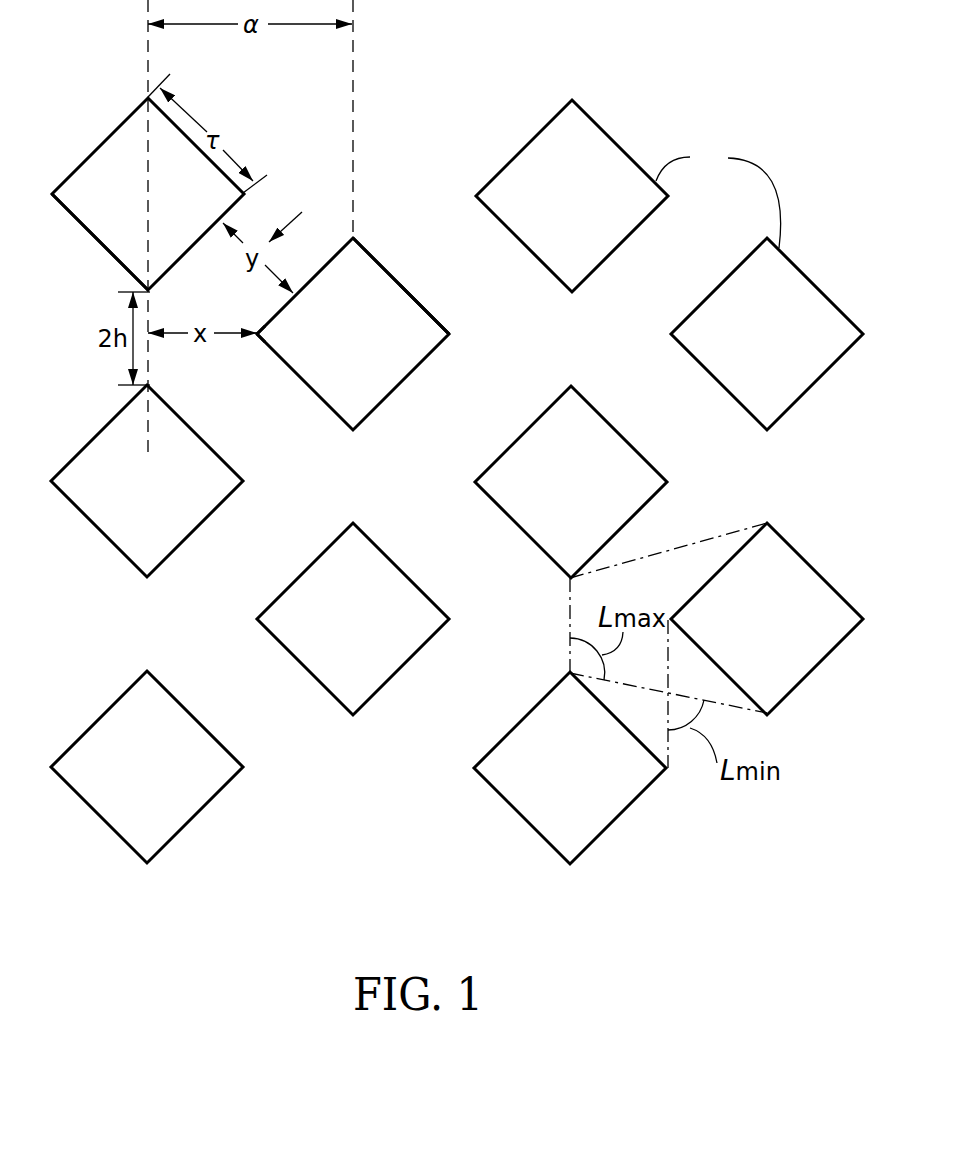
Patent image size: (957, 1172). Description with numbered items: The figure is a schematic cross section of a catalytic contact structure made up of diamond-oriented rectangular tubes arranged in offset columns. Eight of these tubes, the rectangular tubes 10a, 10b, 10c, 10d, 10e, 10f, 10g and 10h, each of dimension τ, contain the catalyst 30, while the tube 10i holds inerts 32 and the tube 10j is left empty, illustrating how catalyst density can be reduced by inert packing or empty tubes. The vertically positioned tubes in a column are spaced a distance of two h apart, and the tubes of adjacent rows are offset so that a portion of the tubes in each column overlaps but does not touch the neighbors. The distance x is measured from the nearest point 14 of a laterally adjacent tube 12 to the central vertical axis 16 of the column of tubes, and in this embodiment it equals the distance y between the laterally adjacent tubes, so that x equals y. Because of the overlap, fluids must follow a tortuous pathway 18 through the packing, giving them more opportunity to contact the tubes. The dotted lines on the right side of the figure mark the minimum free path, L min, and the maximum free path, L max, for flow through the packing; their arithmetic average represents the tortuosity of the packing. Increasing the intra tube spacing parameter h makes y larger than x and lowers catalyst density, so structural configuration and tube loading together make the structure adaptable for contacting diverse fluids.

The rectangular tube 10a is at (528, 145).
The rectangular tube 10b is at (788, 259).
The rectangular tube 10c is at (612, 428).
The rectangular tube 10d is at (113, 420).
The rectangular tube 10e is at (92, 236).
The rectangular tube 10f is at (115, 704).
The rectangular tube 10g is at (395, 673).
The rectangular tube 10h is at (790, 546).
The tube 10i is at (312, 389).
The tube 10j is at (520, 815).
The laterally adjacent tube 12 is at (370, 251).
The nearest point 14 is at (258, 338).
The central vertical axis 16 is at (117, 262).
The tortuous pathway 18 is at (462, 438).
The catalyst 30 is at (718, 196).
The inerts 32 is at (430, 312).